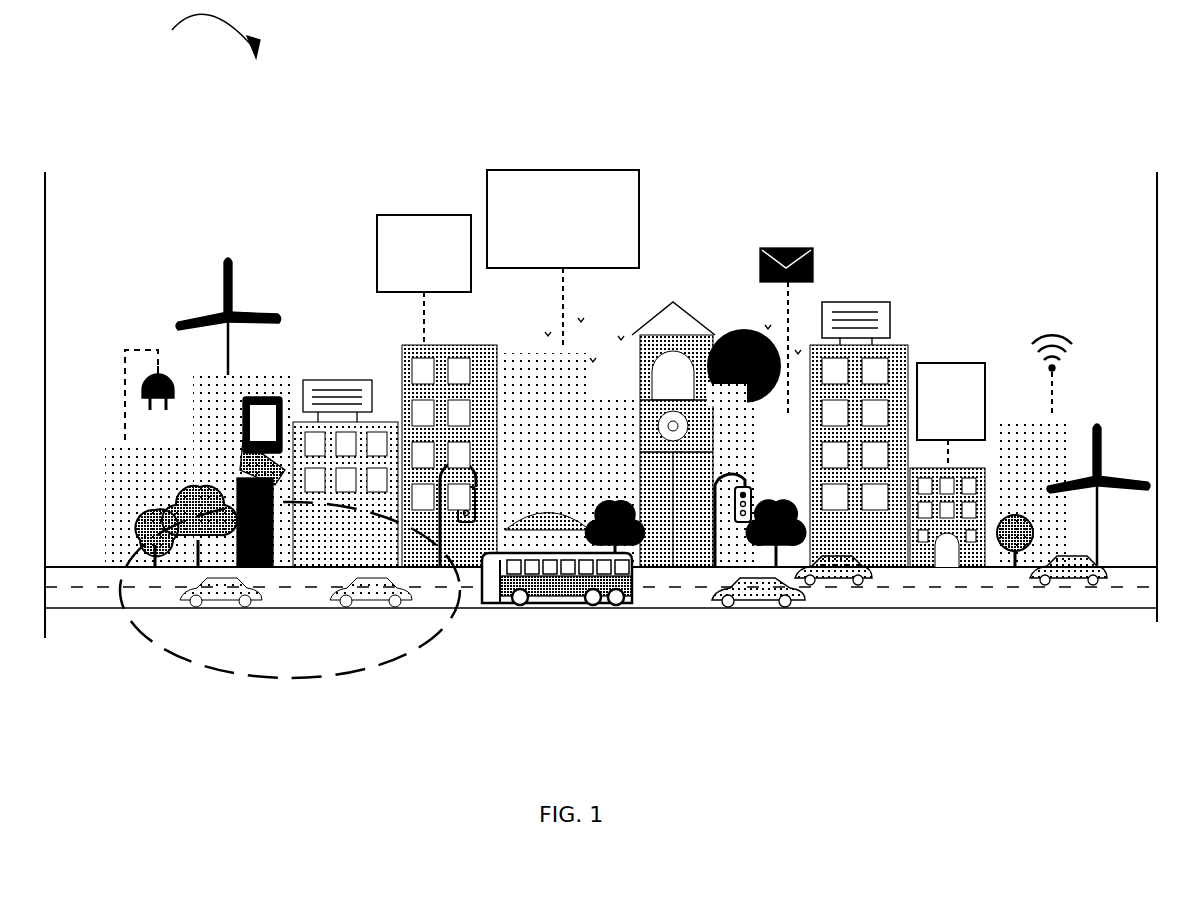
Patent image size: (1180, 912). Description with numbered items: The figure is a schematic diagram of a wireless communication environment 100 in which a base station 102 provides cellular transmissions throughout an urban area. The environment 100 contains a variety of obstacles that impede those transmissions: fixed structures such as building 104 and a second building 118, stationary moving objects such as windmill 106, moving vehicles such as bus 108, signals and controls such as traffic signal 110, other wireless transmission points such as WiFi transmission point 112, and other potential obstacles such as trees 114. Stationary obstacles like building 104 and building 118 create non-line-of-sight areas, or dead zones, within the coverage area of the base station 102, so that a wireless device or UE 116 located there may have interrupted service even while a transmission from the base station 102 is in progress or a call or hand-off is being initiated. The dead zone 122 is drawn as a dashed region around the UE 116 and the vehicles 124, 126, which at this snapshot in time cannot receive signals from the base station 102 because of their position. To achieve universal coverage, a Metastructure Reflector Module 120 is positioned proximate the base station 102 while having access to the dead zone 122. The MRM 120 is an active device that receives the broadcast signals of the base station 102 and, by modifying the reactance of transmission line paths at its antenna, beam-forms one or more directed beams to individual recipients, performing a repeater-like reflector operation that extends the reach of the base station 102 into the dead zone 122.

The wireless communication environment 100 is at (205, 36).
The base station 102 is at (562, 170).
The building 104 is at (372, 422).
The windmill 106 is at (232, 272).
The bus 108 is at (565, 603).
The traffic signal 110 is at (748, 490).
The WiFi transmission point 112 is at (951, 363).
The trees 114 is at (152, 516).
The wireless device/UE 116 is at (264, 396).
The building 118 is at (893, 345).
The Metastructure Reflector Module 120 is at (419, 214).
The dead zone 122 is at (360, 672).
The vehicle 124 is at (195, 597).
The vehicle 126 is at (395, 597).